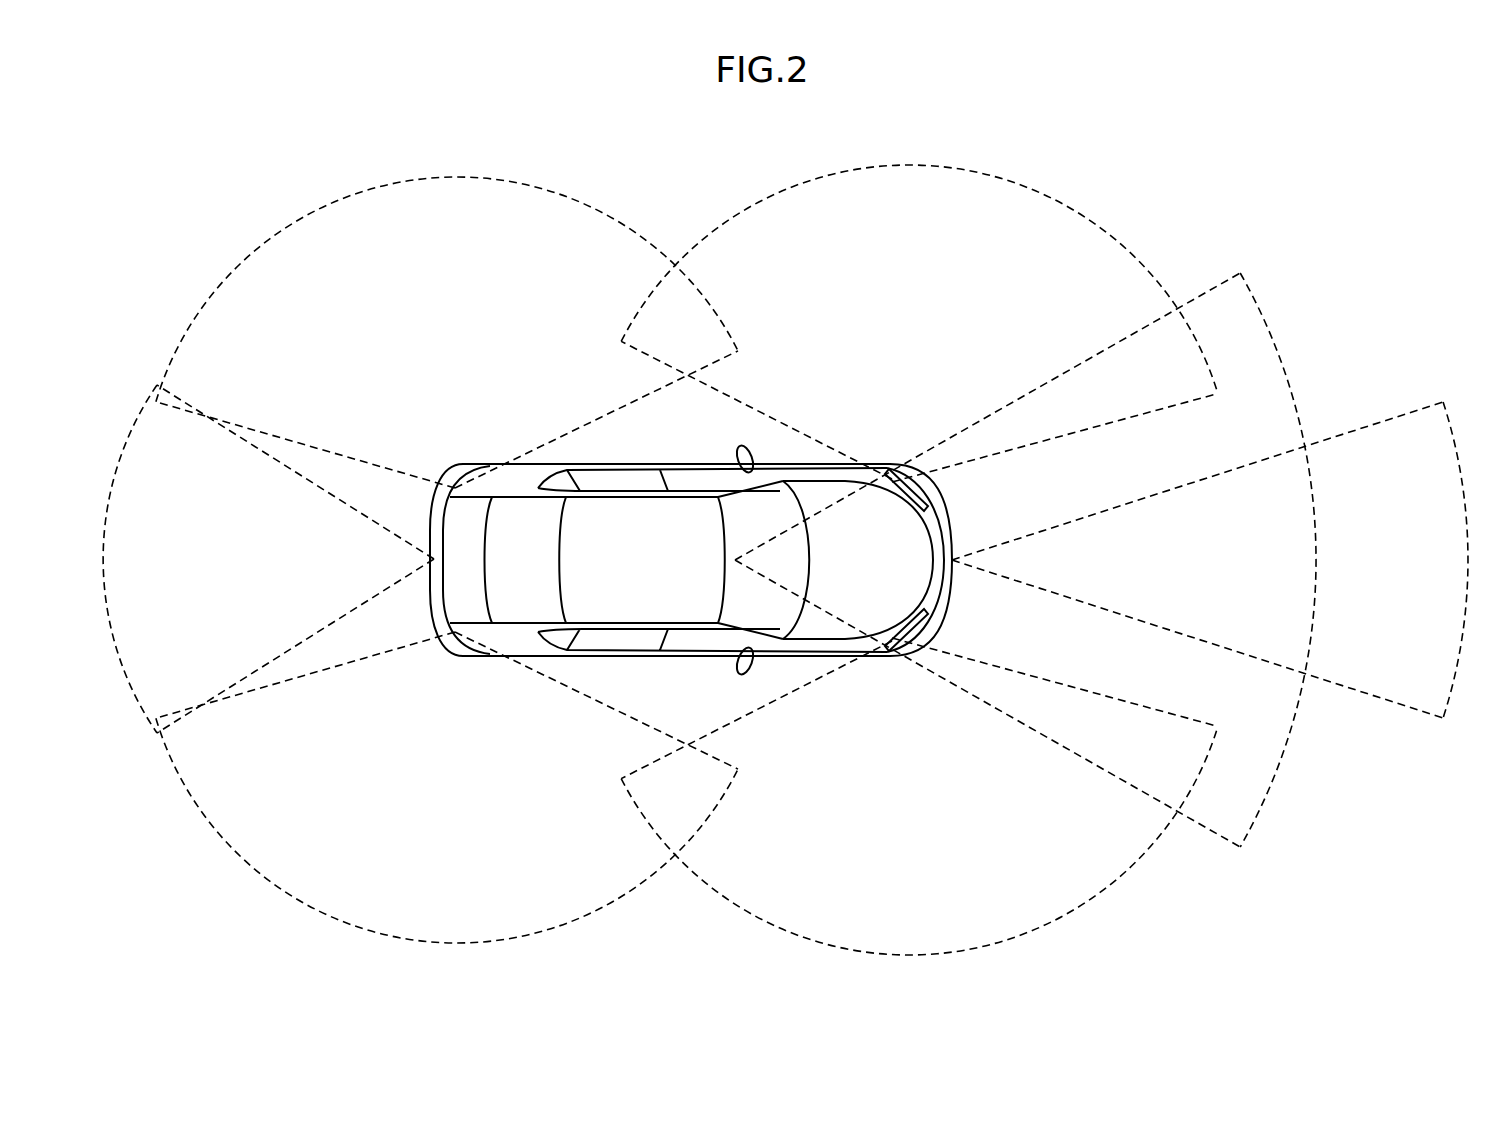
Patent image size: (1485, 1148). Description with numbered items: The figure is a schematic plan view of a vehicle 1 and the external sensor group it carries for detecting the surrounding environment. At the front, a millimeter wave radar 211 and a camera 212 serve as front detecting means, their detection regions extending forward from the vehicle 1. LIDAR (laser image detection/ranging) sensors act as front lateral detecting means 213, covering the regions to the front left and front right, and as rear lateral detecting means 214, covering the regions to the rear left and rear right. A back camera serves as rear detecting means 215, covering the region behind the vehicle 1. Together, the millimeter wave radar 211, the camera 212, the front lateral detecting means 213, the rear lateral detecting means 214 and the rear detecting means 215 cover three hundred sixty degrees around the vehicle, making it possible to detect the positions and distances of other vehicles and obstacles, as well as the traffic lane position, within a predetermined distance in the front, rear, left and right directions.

The vehicle 1 is at (648, 534).
The millimeter wave radar 211 is at (1403, 414).
The camera 212 is at (1273, 333).
The front lateral detecting means 213 is at (1087, 217).
The rear lateral detecting means 214 is at (268, 247).
The rear detecting means 215 is at (138, 410).